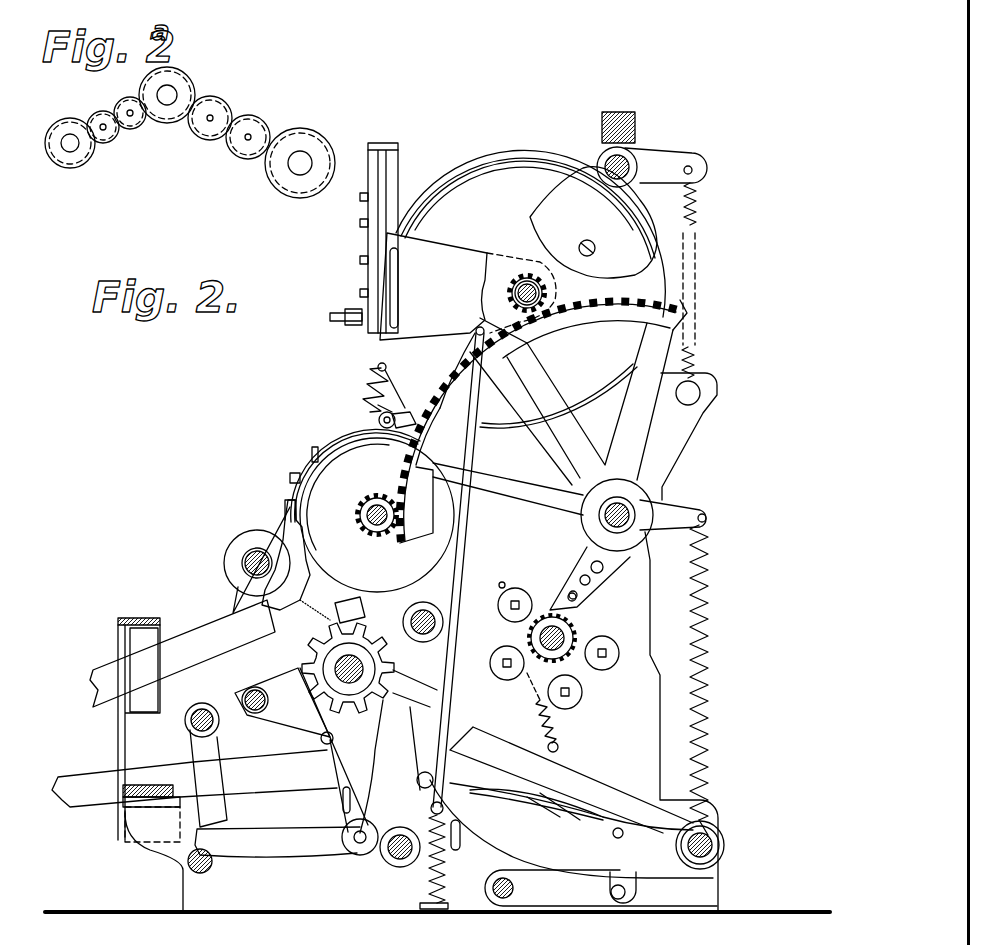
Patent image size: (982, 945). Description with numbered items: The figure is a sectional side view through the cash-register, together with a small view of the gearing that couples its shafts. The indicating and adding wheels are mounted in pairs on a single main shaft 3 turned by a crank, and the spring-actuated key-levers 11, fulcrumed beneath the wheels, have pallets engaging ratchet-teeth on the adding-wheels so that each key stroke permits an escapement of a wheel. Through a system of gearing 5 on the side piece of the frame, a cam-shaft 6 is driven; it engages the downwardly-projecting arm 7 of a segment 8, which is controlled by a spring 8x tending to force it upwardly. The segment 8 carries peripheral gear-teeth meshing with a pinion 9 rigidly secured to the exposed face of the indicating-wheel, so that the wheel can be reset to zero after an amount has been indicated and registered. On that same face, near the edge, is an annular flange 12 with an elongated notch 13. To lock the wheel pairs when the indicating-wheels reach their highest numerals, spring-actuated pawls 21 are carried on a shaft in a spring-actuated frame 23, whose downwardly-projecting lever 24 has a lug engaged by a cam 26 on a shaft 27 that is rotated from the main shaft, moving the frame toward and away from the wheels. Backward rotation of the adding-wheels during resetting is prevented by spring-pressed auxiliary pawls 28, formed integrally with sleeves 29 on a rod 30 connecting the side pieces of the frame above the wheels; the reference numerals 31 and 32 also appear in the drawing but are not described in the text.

In FIG. 2A, the shaft 3 is at (170, 92).
In FIG. 2, the shaft 3 is at (385, 535).
In FIG. 2A, the system of gearing 5 is at (280, 172).
In FIG. 2A, the cam-shaft 6 is at (302, 158).
In FIG. 2, the cam-shaft 6 is at (560, 630).
In FIG. 2, the downwardly-projecting arm 7 is at (610, 563).
In FIG. 2, the segment 8 is at (677, 317).
In FIG. 2, the spring 8x is at (708, 620).
In FIG. 2, the pinion 9 is at (373, 498).
In FIG. 2, the key-lever 11 is at (92, 682).
In FIG. 2, the annular flange 12 is at (317, 567).
In FIG. 2, the elongated opening or notch 13 is at (352, 497).
In FIG. 2, the spring-actuated pawl 21 is at (287, 502).
In FIG. 2, the spring-actuated frame 23 is at (290, 550).
In FIG. 2, the downwardly-projecting arm or lever 24 is at (332, 606).
In FIG. 2A, the cam 26 is at (70, 150).
In FIG. 2, the cam 26 is at (240, 578).
In FIG. 2, the shaft 27 is at (245, 565).
In FIG. 2, the auxiliary pawl 28 is at (384, 426).
In FIG. 2, the sleeve 29 is at (379, 418).
In FIG. 2, the rod 30 is at (372, 402).
In FIG. 2, the spring 31 is at (392, 384).
In FIG. 2, the pin 32 is at (378, 366).